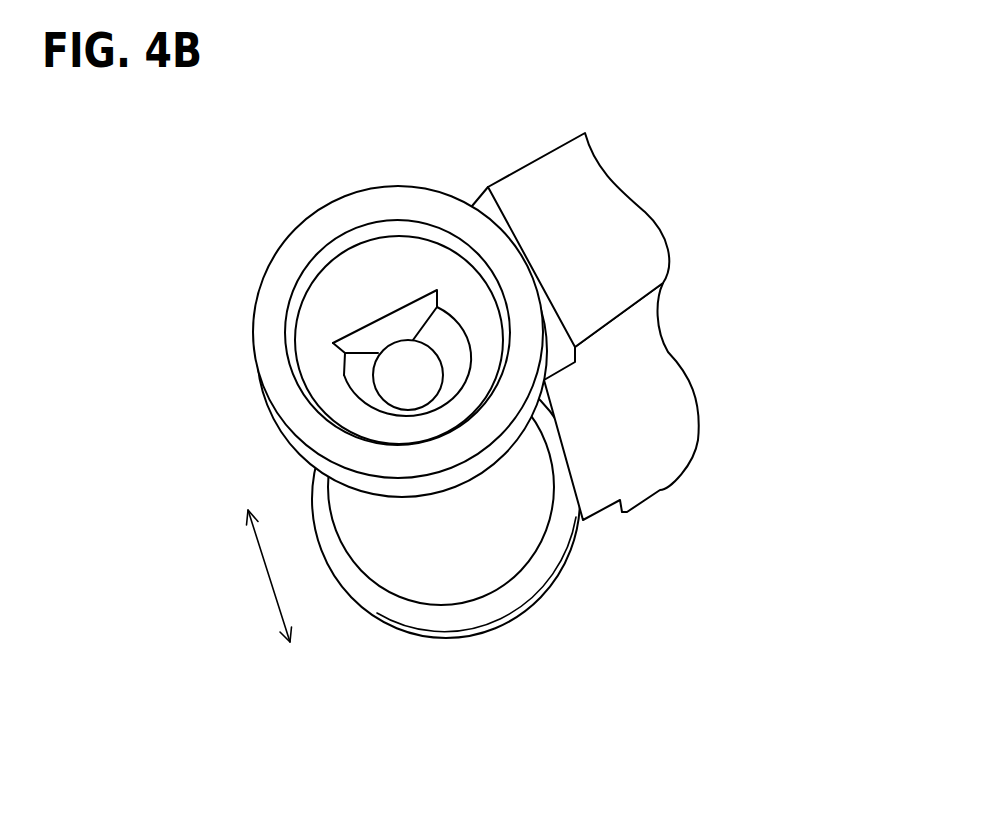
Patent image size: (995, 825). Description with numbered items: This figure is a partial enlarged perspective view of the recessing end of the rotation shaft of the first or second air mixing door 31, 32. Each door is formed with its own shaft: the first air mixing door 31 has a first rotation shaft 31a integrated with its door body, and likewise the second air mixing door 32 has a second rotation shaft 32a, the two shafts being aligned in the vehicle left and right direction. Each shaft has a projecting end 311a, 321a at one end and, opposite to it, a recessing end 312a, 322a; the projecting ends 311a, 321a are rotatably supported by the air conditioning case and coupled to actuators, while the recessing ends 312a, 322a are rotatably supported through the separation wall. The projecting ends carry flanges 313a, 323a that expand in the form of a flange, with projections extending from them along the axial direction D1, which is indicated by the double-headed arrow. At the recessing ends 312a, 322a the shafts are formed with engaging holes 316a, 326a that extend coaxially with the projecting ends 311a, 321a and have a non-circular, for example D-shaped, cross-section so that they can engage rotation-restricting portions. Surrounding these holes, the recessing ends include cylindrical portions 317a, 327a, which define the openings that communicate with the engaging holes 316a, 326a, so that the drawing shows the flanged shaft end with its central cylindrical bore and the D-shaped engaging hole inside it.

The first air mixing door 31 is at (580, 288).
The second air mixing door 32 is at (528, 163).
The first rotation shaft 31a is at (515, 537).
The second rotation shaft 32a is at (515, 537).
The first projecting end 311a is at (489, 542).
The second projecting end 321a is at (487, 570).
The first recessing end 312a is at (326, 294).
The second recessing end 322a is at (326, 294).
The flange 313a is at (521, 499).
The flange 323a is at (563, 573).
The engaging hole 316a is at (288, 383).
The engaging hole 326a is at (340, 388).
The cylindrical portion 317a is at (329, 294).
The cylindrical portion 327a is at (302, 247).
The axial direction D1 is at (264, 576).